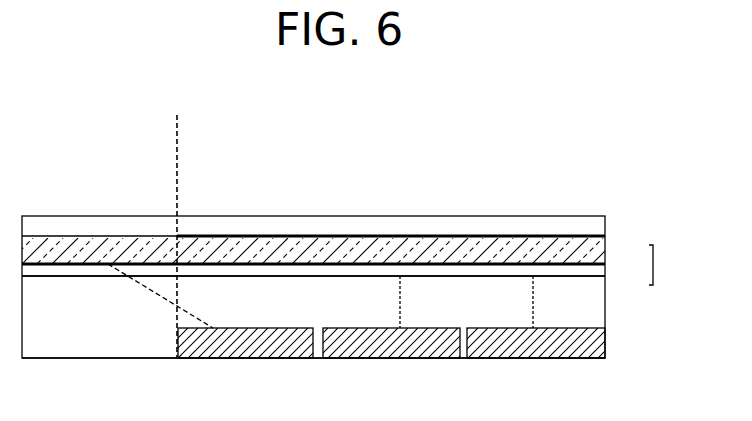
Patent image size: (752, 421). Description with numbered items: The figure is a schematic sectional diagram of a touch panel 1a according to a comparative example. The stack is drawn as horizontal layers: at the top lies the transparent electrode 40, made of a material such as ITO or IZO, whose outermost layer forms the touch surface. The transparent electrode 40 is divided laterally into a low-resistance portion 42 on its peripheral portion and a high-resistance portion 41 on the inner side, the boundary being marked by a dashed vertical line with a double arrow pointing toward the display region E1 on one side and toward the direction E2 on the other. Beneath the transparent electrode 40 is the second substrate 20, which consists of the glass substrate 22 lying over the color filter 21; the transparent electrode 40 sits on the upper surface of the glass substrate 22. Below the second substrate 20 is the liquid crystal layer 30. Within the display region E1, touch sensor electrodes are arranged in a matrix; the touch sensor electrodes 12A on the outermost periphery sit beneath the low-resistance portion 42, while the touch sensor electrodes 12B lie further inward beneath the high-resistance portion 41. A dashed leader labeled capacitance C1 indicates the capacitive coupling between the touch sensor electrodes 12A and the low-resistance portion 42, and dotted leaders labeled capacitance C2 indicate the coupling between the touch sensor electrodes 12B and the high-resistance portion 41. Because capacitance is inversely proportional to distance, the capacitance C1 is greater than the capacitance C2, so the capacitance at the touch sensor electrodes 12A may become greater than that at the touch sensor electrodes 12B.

The touch panel 1a is at (519, 212).
The transparent electrode 40 is at (594, 226).
The low-resistance portion 42 is at (97, 224).
The high-resistance portion 41 is at (225, 224).
The glass substrate 22 is at (594, 250).
The color filter 21 is at (598, 270).
The second substrate 20 is at (664, 265).
The liquid crystal layer 30 is at (594, 302).
The touch sensor electrodes 12A is at (290, 358).
The touch sensor electrodes 12B is at (440, 358).
The capacitance C1 is at (150, 290).
The capacitance C2 is at (400, 290).
The display region E1 is at (231, 129).
The second direction E2 is at (243, 135).